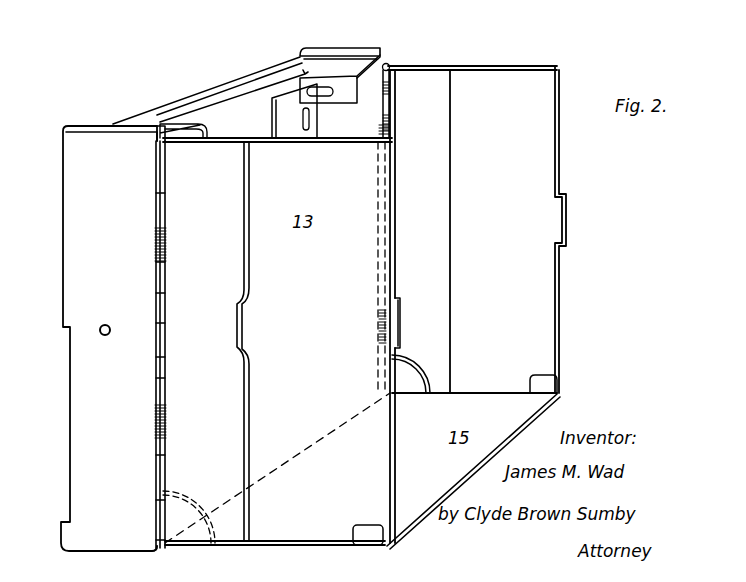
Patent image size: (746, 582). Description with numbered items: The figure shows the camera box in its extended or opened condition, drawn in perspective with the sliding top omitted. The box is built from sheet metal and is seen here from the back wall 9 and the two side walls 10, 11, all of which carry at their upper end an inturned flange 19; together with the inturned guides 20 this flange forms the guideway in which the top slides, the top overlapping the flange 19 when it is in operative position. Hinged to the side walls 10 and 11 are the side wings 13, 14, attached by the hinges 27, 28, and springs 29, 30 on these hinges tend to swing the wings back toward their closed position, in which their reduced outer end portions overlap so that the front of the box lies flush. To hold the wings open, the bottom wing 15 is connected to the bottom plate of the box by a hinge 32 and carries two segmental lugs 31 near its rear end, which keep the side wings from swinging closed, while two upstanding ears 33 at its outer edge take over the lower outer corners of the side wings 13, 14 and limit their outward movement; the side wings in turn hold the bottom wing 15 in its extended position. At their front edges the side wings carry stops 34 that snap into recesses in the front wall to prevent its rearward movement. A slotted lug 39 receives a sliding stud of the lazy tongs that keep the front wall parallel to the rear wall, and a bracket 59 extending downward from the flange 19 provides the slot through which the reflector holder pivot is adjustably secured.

The back wall 9 is at (218, 117).
The side wall 10 is at (63, 250).
The side wall 11 is at (372, 82).
The hinged side wing 13 is at (277, 341).
The hinged side wing 14 is at (542, 87).
The bottom wing 15 is at (473, 471).
The inturned flange 19 is at (235, 92).
The inturned guide 20 is at (115, 126).
The hinge 27 is at (156, 187).
The hinge 28 is at (390, 107).
The spring 29 is at (167, 250).
The spring 30 is at (377, 323).
The segmental lug 31 is at (413, 368).
The hinge 32 is at (155, 543).
The upstanding ear 33 is at (367, 534).
The stop 34 is at (401, 311).
The lug 39 is at (317, 127).
The bracket 59 is at (346, 84).